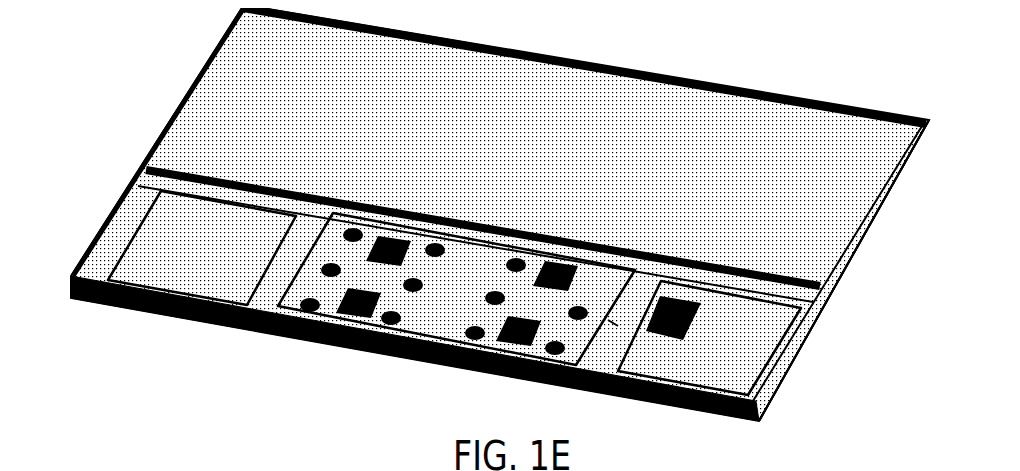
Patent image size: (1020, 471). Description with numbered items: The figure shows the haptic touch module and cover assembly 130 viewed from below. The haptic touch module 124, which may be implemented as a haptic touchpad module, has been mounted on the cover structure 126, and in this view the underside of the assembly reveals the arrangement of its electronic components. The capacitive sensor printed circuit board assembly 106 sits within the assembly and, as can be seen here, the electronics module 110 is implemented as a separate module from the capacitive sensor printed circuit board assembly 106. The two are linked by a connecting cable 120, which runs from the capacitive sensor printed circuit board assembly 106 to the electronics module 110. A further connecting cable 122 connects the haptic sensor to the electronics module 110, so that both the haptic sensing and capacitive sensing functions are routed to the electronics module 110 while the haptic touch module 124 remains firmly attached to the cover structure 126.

The haptic touch module and cover assembly 130 is at (150, 75).
The cover structure 126 is at (840, 262).
The haptic touch module 124 is at (182, 260).
The capacitive sensor printed circuit board assembly 106 is at (347, 295).
The connecting cable 120 is at (557, 337).
The connecting cable 122 is at (603, 318).
The electronics module 110 is at (660, 333).